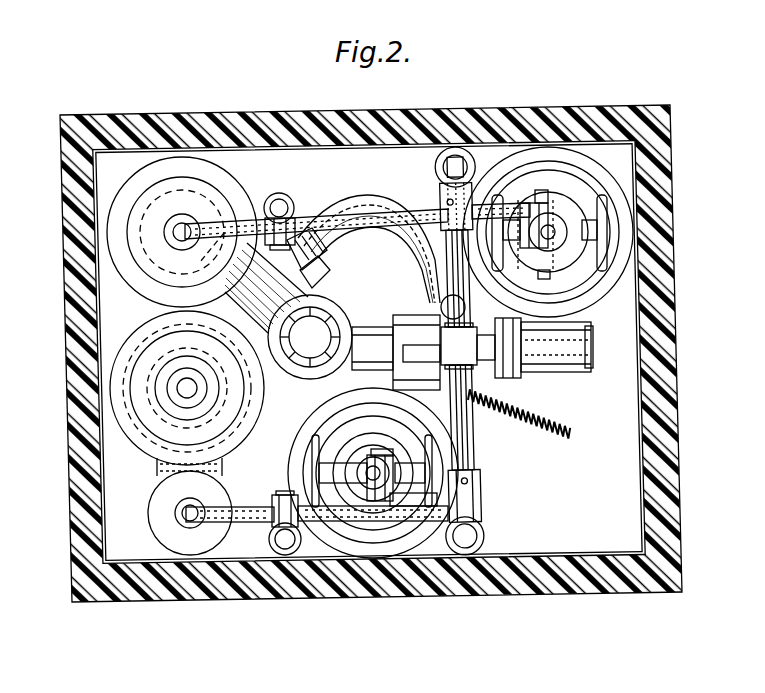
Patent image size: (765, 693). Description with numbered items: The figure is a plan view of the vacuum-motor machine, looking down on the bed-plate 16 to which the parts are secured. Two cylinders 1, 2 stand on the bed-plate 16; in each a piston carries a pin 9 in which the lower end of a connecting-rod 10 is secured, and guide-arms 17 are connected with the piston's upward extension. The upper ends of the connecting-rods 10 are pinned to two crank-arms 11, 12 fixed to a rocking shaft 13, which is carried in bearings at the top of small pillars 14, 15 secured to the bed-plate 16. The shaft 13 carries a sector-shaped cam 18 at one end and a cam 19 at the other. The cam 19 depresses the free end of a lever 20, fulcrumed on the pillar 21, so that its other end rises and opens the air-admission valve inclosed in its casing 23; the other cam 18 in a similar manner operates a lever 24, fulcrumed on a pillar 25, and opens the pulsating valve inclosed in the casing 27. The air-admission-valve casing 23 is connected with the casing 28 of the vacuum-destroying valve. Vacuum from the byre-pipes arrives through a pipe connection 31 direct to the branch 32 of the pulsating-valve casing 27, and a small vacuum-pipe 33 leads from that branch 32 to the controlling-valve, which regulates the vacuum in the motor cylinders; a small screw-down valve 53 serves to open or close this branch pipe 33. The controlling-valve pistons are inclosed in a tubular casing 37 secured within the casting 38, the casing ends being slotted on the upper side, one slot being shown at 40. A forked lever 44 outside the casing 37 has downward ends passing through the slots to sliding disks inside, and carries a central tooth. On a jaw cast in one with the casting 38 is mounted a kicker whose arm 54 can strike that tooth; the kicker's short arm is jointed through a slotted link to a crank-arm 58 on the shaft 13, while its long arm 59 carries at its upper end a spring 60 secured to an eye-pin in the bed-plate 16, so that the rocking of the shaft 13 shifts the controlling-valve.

The cylinder 1 is at (292, 445).
The cylinder 2 is at (597, 180).
The pin 9 is at (384, 448).
The connecting-rod 10 is at (370, 470).
The crank-arm 11 is at (415, 507).
The crank-arm 12 is at (500, 209).
The rocking shaft 13 is at (474, 430).
The pillar 14 is at (549, 196).
The pillar 15 is at (474, 163).
The bed-plate 16 is at (371, 353).
The guide-arms 17 is at (432, 462).
The cam 18 is at (444, 216).
The cam 19 is at (400, 523).
The lever 20 is at (263, 522).
The pillar 21 is at (283, 555).
The casing 23 is at (190, 515).
The lever 24 is at (300, 233).
The pillar 25 is at (280, 193).
The casing 27 is at (160, 238).
The casing 28 is at (140, 412).
The pipe connection 31 is at (294, 361).
The branch 32 is at (332, 264).
The vacuum-pipe 33 is at (325, 276).
The tubular casing 37 is at (580, 372).
The casting 38 is at (400, 315).
The slot 40 is at (584, 352).
The forked lever 44 is at (358, 345).
The screw-down valve 53 is at (441, 304).
The kicker arm 54 is at (412, 345).
The crank-arm 58 is at (459, 346).
The long arm 59 is at (516, 372).
The spring 60 is at (498, 402).